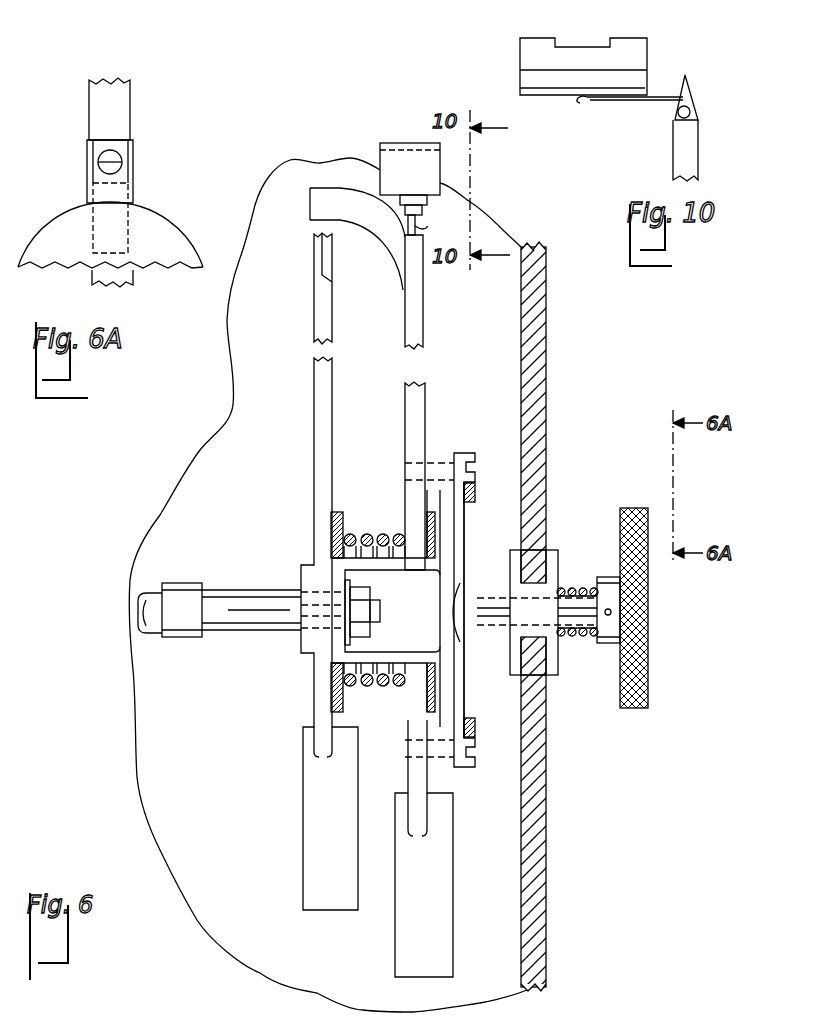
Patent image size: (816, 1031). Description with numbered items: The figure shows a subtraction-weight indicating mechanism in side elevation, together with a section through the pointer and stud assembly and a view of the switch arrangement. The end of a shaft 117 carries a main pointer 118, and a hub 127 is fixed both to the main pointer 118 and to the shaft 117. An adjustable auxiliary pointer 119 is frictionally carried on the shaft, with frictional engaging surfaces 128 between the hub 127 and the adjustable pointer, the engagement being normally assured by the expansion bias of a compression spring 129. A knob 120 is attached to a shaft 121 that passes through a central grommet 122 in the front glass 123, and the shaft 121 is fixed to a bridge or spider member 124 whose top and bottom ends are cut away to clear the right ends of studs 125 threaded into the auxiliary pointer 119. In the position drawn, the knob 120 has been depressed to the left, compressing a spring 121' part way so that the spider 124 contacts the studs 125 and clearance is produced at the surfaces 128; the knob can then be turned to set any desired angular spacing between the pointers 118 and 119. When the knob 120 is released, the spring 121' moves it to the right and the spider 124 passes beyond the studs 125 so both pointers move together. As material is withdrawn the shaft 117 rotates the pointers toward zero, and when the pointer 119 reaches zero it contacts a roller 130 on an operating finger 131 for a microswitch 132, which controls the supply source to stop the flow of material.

In FIG. 6, the shaft 117 is at (271, 580).
In FIG. 6, the main pointer 118 is at (332, 425).
In FIG. 6, the adjustable auxiliary pointer 119 is at (425, 398).
In FIG. 6A, the adjustable auxiliary pointer 119 is at (132, 110).
In FIG. 10, the adjustable auxiliary pointer 119 is at (690, 146).
In FIG. 6, the knob 120 is at (638, 507).
In FIG. 6A, the knob 120 is at (182, 232).
In FIG. 6, the shaft 121 is at (539, 639).
In FIG. 6, the spring 121' is at (581, 569).
In FIG. 6, the central grommet 122 is at (553, 548).
In FIG. 6, the front glass 123 is at (548, 452).
In FIG. 6, the bridge or spider member 124 is at (497, 693).
In FIG. 6A, the bridge or spider member 124 is at (133, 175).
In FIG. 6, the studs 125 is at (462, 450).
In FIG. 6A, the studs 125 is at (100, 158).
In FIG. 6, the hub 127 is at (427, 578).
In FIG. 6, the frictional engaging surfaces 128 is at (427, 520).
In FIG. 6, the compression spring 129 is at (385, 688).
In FIG. 6, the roller 130 is at (418, 232).
In FIG. 10, the roller 130 is at (697, 117).
In FIG. 10, the operating finger 131 is at (627, 112).
In FIG. 6, the microswitch 132 is at (395, 173).
In FIG. 10, the microswitch 132 is at (635, 53).